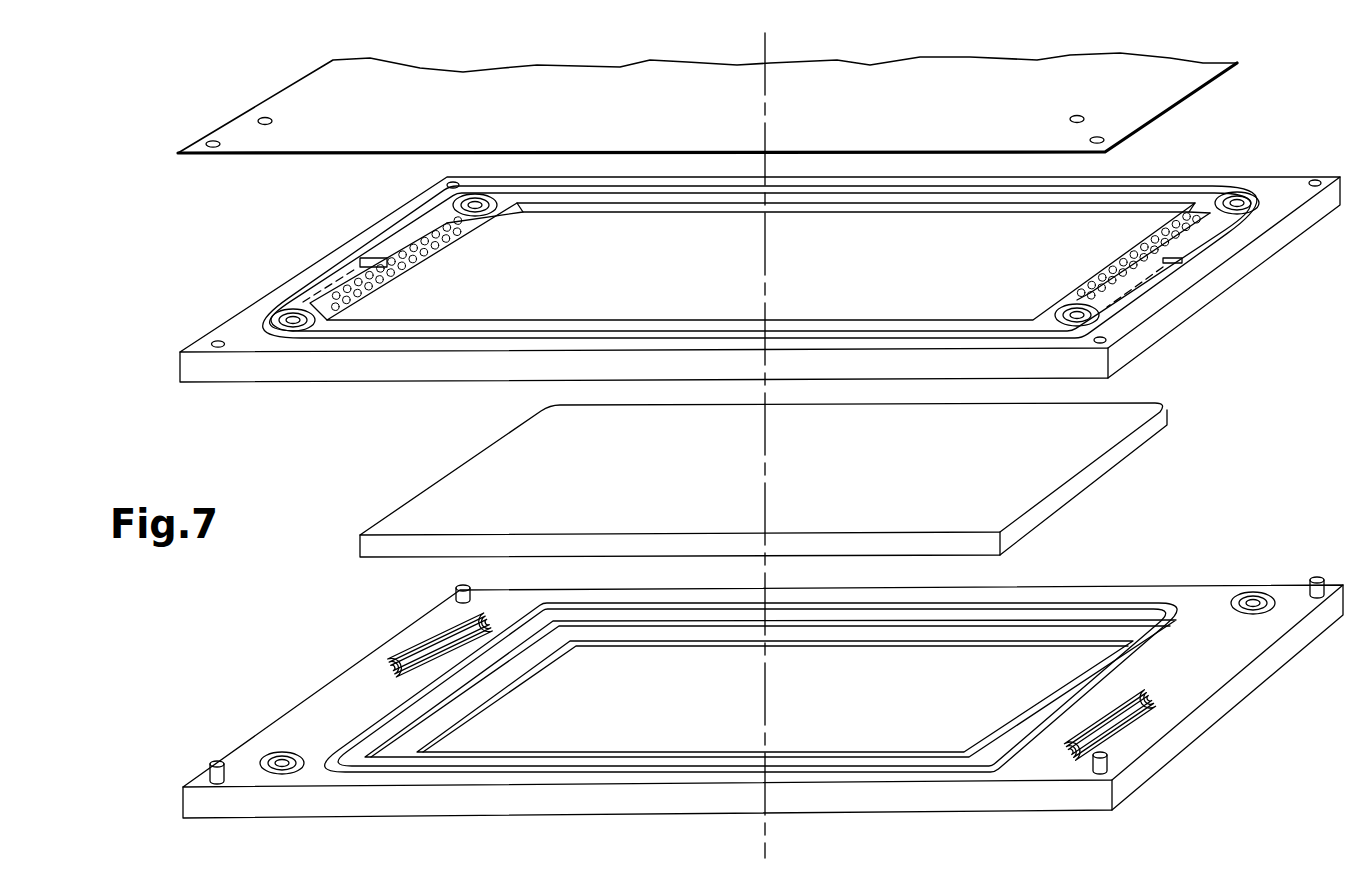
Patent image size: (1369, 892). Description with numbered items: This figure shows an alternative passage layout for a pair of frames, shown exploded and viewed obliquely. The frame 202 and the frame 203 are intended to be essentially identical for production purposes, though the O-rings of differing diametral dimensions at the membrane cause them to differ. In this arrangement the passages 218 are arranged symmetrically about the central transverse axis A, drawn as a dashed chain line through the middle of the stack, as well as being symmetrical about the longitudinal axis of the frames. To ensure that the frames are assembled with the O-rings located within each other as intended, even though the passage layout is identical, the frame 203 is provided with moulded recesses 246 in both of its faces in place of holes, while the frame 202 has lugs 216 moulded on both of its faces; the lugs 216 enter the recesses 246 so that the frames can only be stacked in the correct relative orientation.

The frame 202 is at (285, 707).
The frame 203 is at (307, 267).
The lugs 216 is at (450, 600).
The passages 218 is at (420, 658).
The moulded recesses 246 is at (212, 340).
The central transverse axis A is at (767, 488).